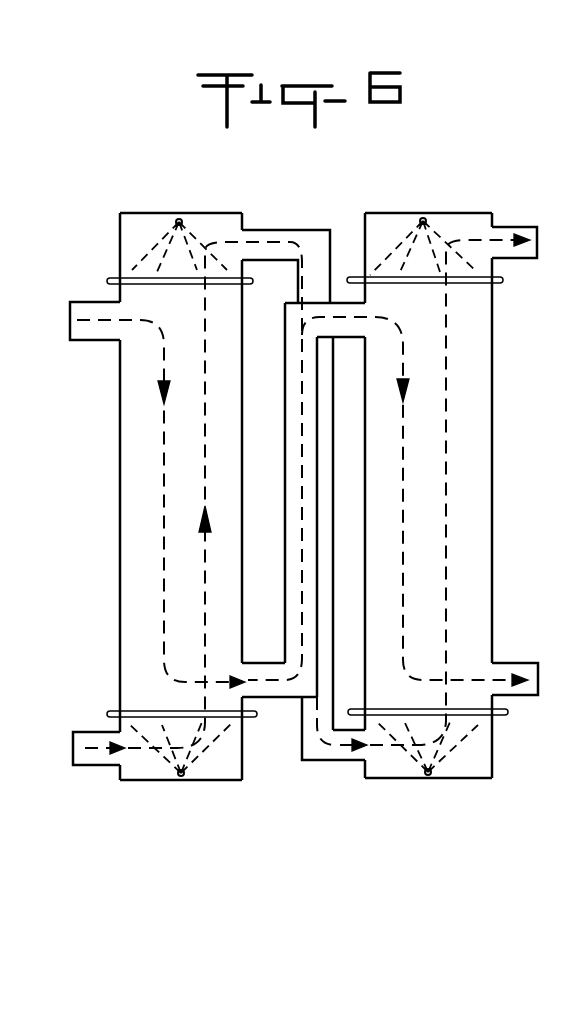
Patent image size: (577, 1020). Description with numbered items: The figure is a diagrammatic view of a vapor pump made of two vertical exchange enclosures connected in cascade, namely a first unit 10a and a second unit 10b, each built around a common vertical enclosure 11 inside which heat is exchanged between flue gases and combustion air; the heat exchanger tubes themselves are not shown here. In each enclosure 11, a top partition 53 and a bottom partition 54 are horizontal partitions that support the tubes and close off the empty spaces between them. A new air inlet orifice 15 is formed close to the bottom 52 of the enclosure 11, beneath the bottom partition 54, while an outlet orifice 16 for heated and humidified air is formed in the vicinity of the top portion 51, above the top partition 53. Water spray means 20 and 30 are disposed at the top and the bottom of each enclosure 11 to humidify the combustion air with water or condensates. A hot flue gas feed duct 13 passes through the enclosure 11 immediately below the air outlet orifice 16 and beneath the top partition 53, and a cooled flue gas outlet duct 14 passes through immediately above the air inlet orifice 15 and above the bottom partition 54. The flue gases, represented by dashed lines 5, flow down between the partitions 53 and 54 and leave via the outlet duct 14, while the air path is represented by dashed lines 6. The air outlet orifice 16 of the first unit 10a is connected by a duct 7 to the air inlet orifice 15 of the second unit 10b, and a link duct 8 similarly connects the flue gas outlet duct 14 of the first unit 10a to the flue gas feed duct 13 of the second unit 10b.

The first unit 10a is at (143, 203).
The second unit 10b is at (425, 202).
The common vertical enclosure 11 is at (120, 499).
The flue gas path 5 is at (160, 428).
The air path 6 is at (207, 485).
The duct 7 is at (332, 520).
The connecting conduit 8 is at (283, 403).
The hot flue gas feed duct 13 is at (84, 340).
The cooled flue gas outlet duct 14 is at (265, 663).
The new air inlet orifice 15 is at (113, 737).
The outlet orifice 16 is at (236, 232).
The water spray means 20 is at (180, 221).
The water spray means 30 is at (182, 777).
The top portion 51 is at (163, 213).
The bottom 52 is at (142, 782).
The top partition 53 is at (107, 280).
The bottom partition 54 is at (253, 718).